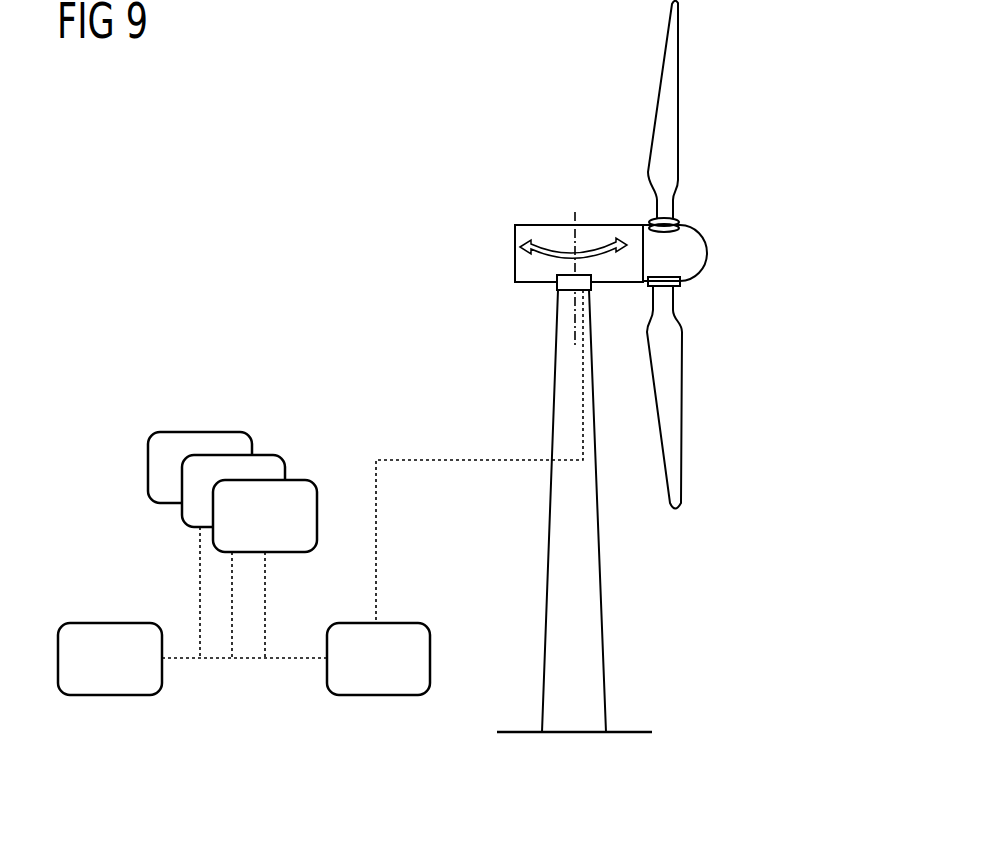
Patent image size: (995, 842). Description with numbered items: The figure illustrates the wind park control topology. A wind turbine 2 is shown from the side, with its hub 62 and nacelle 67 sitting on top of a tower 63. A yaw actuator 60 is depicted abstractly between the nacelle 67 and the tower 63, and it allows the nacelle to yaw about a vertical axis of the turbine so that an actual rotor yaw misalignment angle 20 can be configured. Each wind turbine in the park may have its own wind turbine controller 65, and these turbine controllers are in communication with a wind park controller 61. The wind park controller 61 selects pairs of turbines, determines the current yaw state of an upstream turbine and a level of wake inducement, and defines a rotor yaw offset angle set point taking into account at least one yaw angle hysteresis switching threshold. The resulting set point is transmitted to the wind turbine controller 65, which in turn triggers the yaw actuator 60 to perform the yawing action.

The wind turbine 2 is at (488, 143).
The rotor yaw misalignment angle 20 is at (593, 250).
The yaw actuator 60 is at (558, 288).
The wind park controller 61 is at (110, 697).
The hub 62 is at (697, 253).
The tower 63 is at (601, 603).
The wind turbine controller 65 is at (283, 553).
The nacelle 67 is at (515, 253).